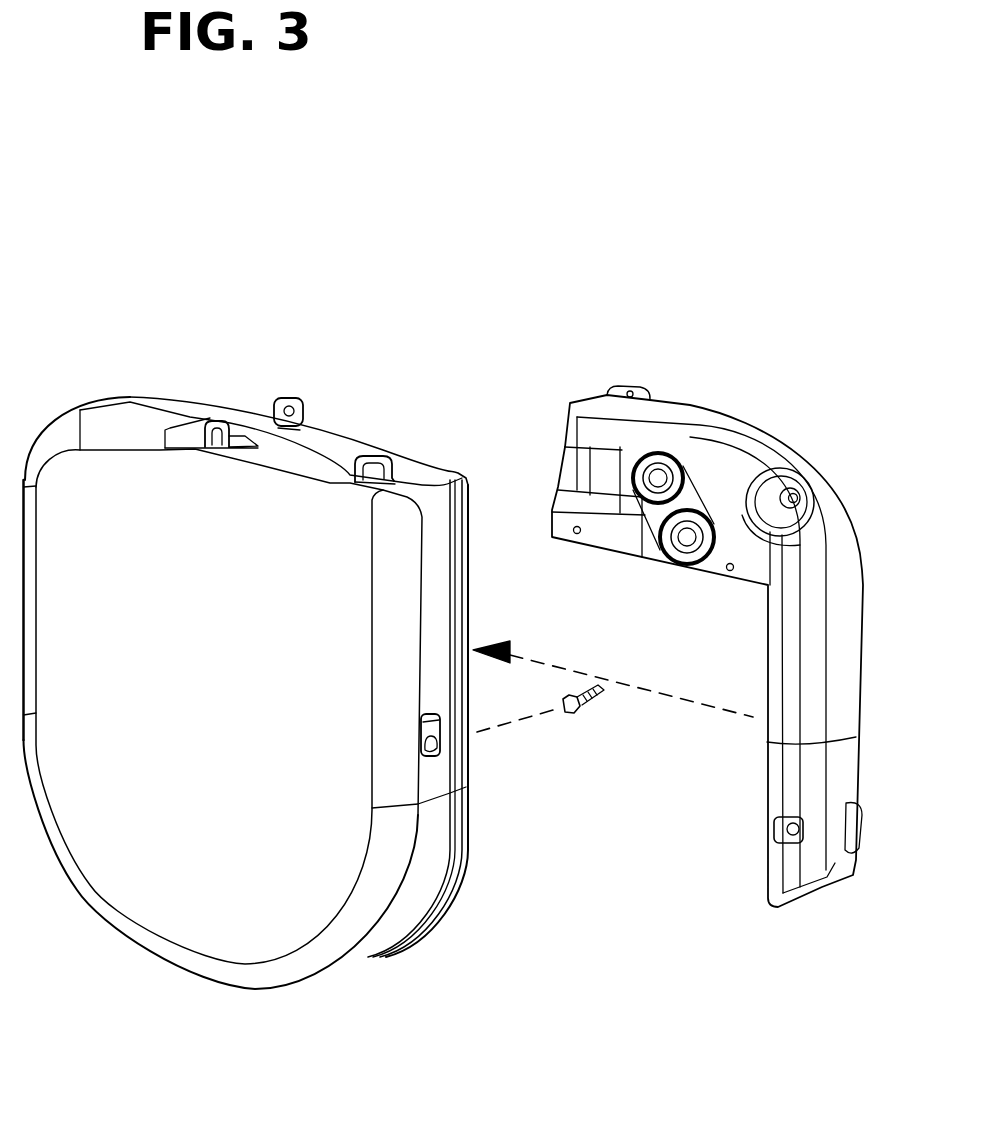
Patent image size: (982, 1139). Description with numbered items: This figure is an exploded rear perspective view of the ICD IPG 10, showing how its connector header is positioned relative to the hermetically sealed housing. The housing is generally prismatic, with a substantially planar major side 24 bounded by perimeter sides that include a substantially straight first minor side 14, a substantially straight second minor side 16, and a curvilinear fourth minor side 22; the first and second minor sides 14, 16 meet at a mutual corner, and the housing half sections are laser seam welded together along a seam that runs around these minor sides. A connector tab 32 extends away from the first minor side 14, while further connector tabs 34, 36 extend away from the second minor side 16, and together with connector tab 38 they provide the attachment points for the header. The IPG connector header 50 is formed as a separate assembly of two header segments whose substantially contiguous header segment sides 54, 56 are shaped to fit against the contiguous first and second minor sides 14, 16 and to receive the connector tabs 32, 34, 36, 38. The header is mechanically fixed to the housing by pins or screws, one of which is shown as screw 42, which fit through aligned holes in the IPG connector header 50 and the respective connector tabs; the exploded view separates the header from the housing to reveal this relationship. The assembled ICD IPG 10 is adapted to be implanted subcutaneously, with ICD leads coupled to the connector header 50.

The ICD IPG 10 is at (209, 123).
The first minor side 14 is at (440, 614).
The second minor side 16 is at (322, 455).
The curvilinear fourth minor side 22 is at (390, 932).
The planar major side 24 is at (187, 921).
The connector tab 32 is at (440, 750).
The connector tab 34 is at (209, 415).
The connector tab 36 is at (293, 392).
The connector tab 38 is at (377, 455).
The screw 42 is at (603, 710).
The IPG connector header 50 is at (773, 371).
The header segment side 54 is at (757, 767).
The header segment side 56 is at (638, 566).